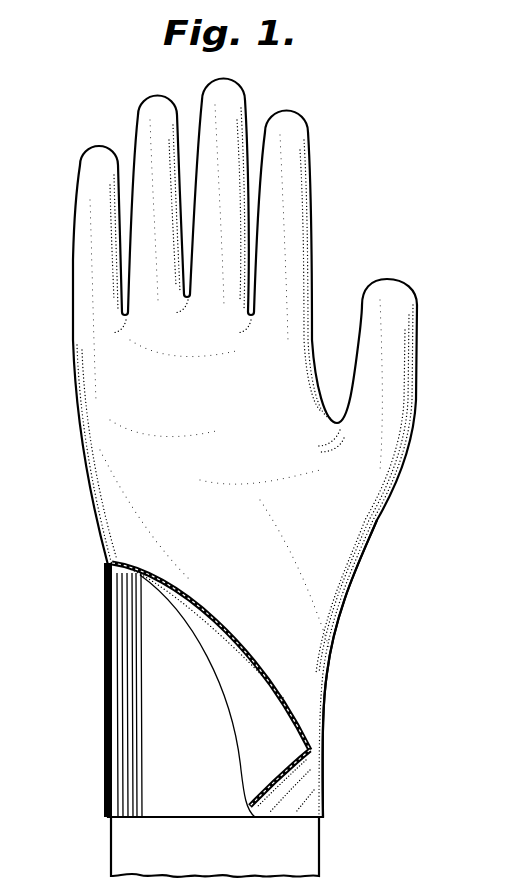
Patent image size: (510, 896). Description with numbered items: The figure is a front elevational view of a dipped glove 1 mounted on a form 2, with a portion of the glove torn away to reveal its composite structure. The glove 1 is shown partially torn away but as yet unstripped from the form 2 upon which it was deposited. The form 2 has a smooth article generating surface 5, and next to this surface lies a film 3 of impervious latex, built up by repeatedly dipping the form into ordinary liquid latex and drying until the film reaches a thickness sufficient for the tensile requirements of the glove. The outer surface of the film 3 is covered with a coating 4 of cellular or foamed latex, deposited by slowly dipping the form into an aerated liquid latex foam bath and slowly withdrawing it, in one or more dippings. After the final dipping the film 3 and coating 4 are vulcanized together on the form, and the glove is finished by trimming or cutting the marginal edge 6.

The dipped glove 1 is at (348, 520).
The form 2 is at (113, 835).
The film of impervious latex 3 is at (252, 777).
The coating of cellular or foamed latex 4 is at (325, 697).
The smooth article generating surface 5 is at (138, 623).
The marginal edge 6 is at (302, 818).